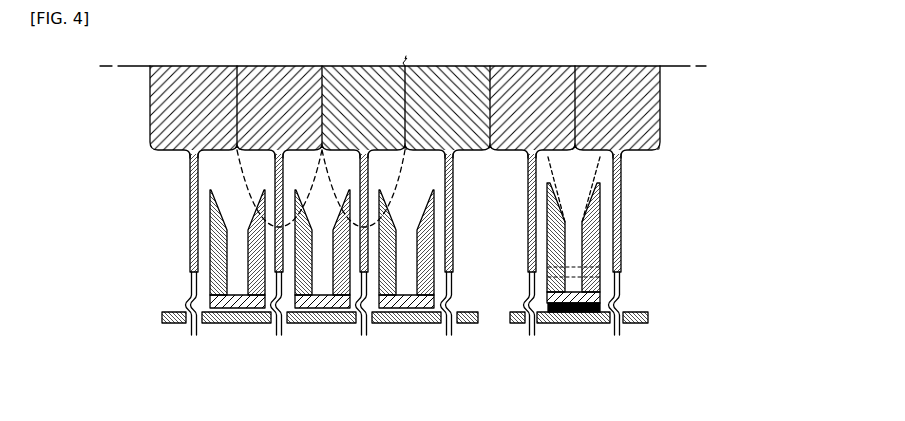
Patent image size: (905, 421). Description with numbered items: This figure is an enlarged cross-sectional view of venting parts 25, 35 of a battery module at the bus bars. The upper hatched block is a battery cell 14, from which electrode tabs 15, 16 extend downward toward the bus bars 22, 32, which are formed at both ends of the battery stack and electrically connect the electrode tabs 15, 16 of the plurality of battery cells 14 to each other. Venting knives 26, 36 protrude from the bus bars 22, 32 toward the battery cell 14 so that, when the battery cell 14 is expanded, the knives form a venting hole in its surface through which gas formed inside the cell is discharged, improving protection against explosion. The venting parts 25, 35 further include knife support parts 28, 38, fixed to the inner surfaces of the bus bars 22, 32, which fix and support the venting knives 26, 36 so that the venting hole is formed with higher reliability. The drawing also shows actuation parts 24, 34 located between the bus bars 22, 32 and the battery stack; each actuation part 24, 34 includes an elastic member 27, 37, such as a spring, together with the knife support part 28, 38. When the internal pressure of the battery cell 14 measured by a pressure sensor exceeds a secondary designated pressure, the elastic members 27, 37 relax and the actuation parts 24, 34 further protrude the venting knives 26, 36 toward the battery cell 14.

The battery cell 14 is at (660, 103).
The electrode tab 15 is at (452, 244).
The electrode tab 16 is at (622, 195).
The bus bar 22 is at (410, 347).
The bus bar 32 is at (633, 323).
The actuation part 24 is at (459, 302).
The actuation part 34 is at (739, 285).
The venting part 25 is at (315, 223).
The venting part 35 is at (100, 238).
The venting knife 26 is at (351, 222).
The venting knife 36 is at (207, 253).
The elastic member 27 is at (474, 308).
The elastic member 37 is at (598, 304).
The knife support part 28 is at (420, 296).
The knife support part 38 is at (597, 293).